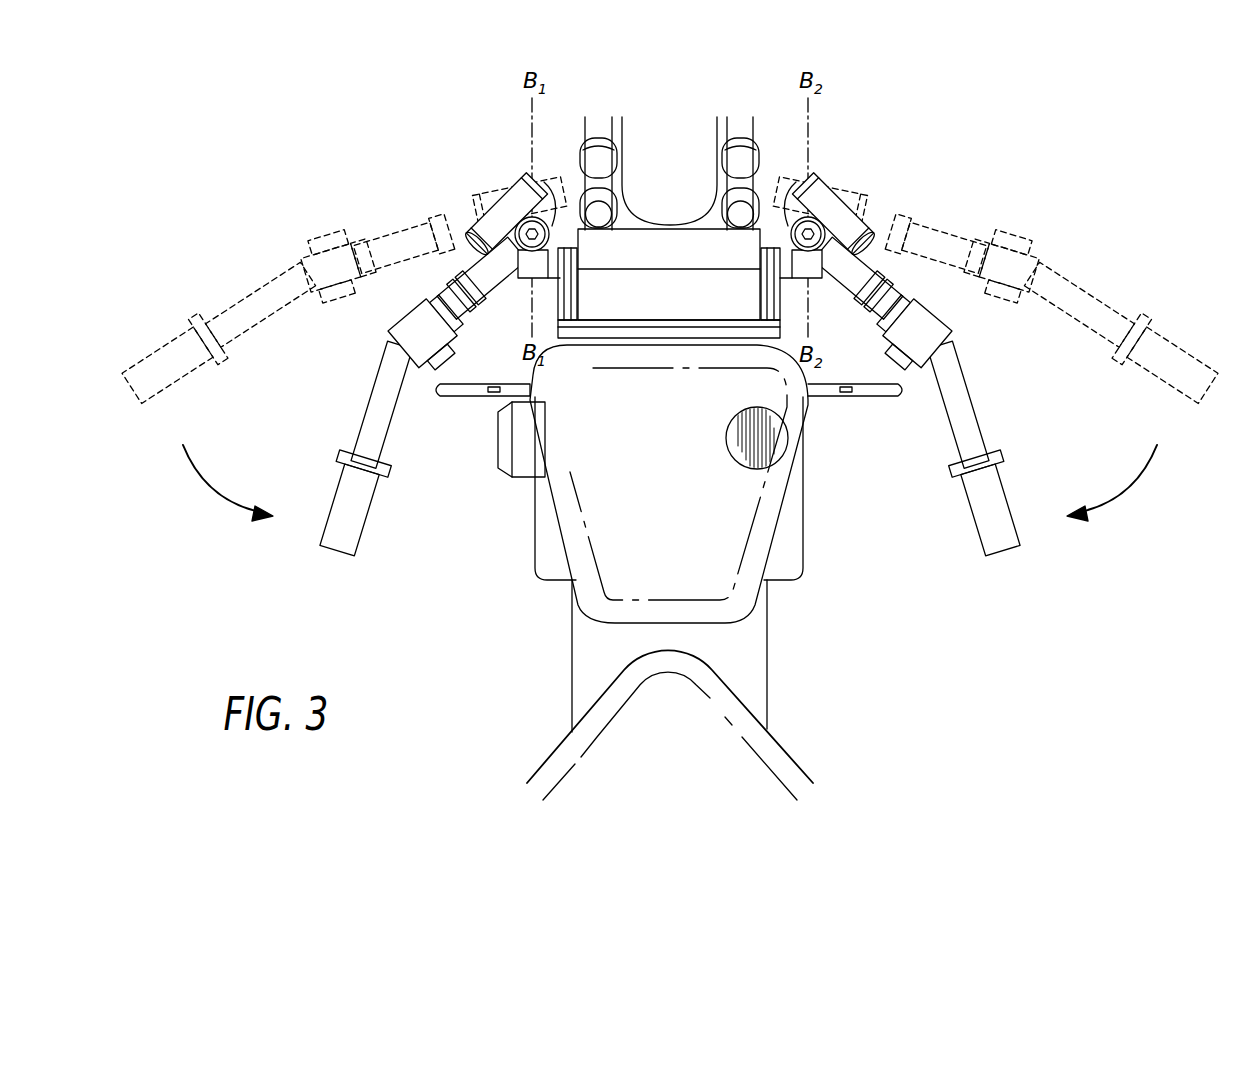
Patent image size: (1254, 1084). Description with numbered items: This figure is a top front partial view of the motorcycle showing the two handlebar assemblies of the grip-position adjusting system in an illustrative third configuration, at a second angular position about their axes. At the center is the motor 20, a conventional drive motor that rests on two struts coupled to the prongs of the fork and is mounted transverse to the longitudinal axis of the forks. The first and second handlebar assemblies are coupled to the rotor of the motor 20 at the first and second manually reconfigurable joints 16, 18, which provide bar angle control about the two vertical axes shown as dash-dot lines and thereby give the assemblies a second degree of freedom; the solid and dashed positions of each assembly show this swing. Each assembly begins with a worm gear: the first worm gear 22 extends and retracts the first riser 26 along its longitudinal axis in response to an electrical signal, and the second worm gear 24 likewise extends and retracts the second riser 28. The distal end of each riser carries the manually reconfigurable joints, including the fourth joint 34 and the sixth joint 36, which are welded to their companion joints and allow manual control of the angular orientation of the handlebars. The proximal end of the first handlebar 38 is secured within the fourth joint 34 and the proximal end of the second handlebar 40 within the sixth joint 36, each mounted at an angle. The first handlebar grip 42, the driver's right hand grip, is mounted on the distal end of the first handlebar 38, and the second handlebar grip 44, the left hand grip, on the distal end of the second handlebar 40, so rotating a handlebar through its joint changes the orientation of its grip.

The first manually reconfigurable joint 16 is at (810, 263).
The second manually reconfigurable joint 18 is at (528, 268).
The motor 20 is at (662, 250).
The first worm gear 22 is at (840, 190).
The second worm gear 24 is at (473, 214).
The first riser 26 is at (892, 290).
The second riser 28 is at (450, 288).
The fourth manually reconfigurable joint 34 is at (912, 333).
The sixth manually reconfigurable joint 36 is at (413, 343).
The first handlebar 38 is at (952, 400).
The second handlebar 40 is at (375, 430).
The first handlebar grip 42 is at (988, 562).
The second handlebar grip 44 is at (343, 515).